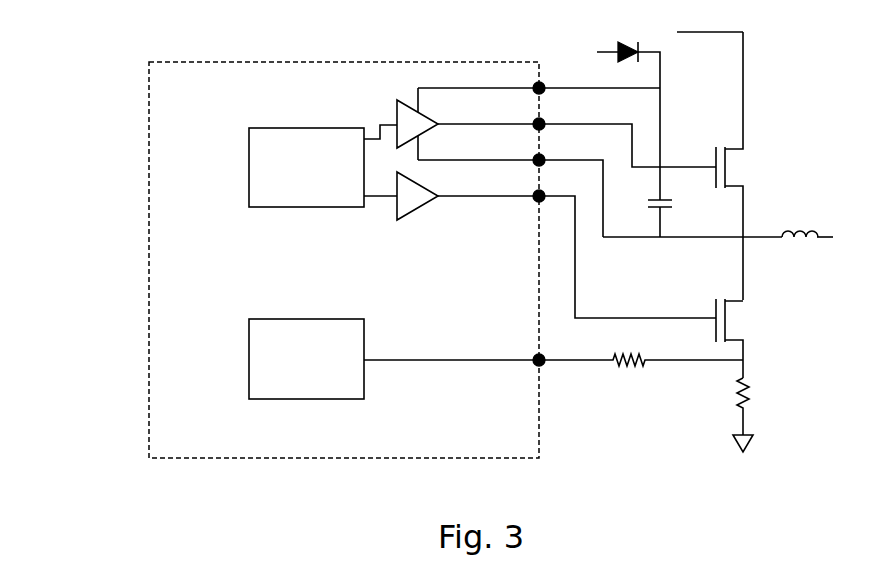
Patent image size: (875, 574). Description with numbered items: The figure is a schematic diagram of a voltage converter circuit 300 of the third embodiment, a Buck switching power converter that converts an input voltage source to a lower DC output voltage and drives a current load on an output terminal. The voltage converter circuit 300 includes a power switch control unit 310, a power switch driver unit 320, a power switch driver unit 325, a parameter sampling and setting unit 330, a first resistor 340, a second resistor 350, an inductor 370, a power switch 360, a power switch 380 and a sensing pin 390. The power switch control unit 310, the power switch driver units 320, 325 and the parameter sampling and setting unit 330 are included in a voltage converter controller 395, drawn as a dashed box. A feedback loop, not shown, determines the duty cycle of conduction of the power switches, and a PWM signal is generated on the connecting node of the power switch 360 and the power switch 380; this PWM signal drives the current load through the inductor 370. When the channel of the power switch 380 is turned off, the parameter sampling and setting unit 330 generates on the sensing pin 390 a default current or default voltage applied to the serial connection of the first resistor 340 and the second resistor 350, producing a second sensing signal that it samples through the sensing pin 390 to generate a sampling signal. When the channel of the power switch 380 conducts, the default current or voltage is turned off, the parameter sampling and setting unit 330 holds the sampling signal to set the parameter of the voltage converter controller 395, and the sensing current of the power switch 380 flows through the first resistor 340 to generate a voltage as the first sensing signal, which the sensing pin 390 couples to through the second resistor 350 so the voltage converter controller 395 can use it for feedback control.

The voltage converter circuit 300 is at (104, 31).
The voltage converter controller 395 is at (188, 87).
The power switch control unit 310 is at (293, 199).
The power switch driver unit 325 is at (395, 105).
The power switch driver unit 320 is at (418, 213).
The parameter sampling and setting unit 330 is at (293, 390).
The sensing pin 390 is at (545, 366).
The power switch 360 is at (746, 166).
The power switch 380 is at (746, 318).
The inductor 370 is at (808, 242).
The second resistor 350 is at (626, 366).
The first resistor 340 is at (750, 396).